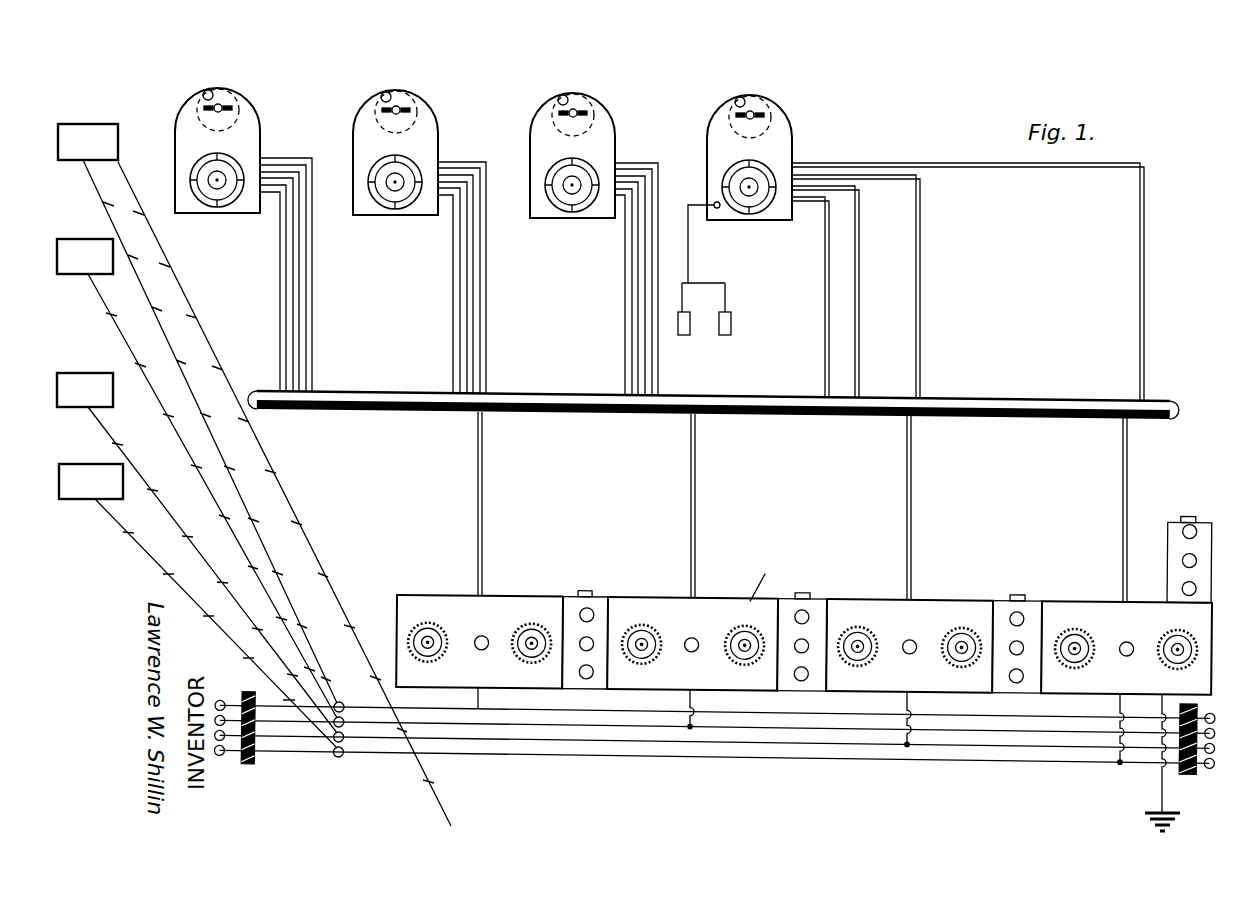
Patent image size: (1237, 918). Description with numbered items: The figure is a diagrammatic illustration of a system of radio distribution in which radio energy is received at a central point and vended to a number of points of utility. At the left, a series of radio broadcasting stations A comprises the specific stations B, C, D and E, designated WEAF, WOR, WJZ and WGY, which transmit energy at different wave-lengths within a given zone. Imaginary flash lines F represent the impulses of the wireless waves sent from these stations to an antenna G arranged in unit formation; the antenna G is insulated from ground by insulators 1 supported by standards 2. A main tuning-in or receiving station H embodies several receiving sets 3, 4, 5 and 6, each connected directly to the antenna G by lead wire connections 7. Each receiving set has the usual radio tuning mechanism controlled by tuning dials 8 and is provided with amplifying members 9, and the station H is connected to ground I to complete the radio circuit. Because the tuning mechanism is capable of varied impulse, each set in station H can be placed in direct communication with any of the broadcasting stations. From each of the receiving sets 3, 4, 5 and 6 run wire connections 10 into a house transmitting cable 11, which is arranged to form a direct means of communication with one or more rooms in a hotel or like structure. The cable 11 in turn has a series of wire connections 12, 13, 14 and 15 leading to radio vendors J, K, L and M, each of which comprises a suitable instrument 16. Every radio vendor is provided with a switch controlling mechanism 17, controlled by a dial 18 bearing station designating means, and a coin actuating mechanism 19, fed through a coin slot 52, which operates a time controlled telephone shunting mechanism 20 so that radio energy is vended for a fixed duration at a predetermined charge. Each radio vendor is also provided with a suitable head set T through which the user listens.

The insulators 1 is at (250, 766).
The standards 2 is at (221, 701).
The receiving set 3 is at (430, 600).
The receiving set 4 is at (640, 600).
The receiving set 5 is at (866, 600).
The receiving set 6 is at (1072, 600).
The lead wire connections 7 is at (480, 701).
The tuning dials 8 is at (514, 630).
The amplifying members 9 is at (570, 596).
The wire connections 10 is at (484, 476).
The house transmitting cable 11 is at (546, 397).
The wire connection 12 is at (280, 259).
The wire connection 13 is at (292, 288).
The wire connection 14 is at (299, 263).
The wire connection 15 is at (311, 297).
The instrument 16 is at (245, 133).
The switch controlling mechanism 17 is at (214, 186).
The dial 18 is at (230, 194).
The coin actuating mechanism 19 is at (228, 108).
The time controlled telephone shunting mechanism 20 is at (197, 100).
The coin slot 52 is at (210, 90).
The series of radio broadcasting stations A is at (88, 95).
The broadcasting station B is at (60, 150).
The broadcasting station C is at (58, 273).
The broadcasting station D is at (56, 406).
The broadcasting station E is at (56, 508).
The flash lines F is at (176, 581).
The antenna G is at (714, 755).
The main receiving station H is at (763, 576).
The ground I is at (1160, 803).
The radio vendor J is at (279, 82).
The radio vendor K is at (450, 82).
The radio vendor L is at (622, 84).
The radio vendor M is at (805, 92).
The head set T is at (704, 288).